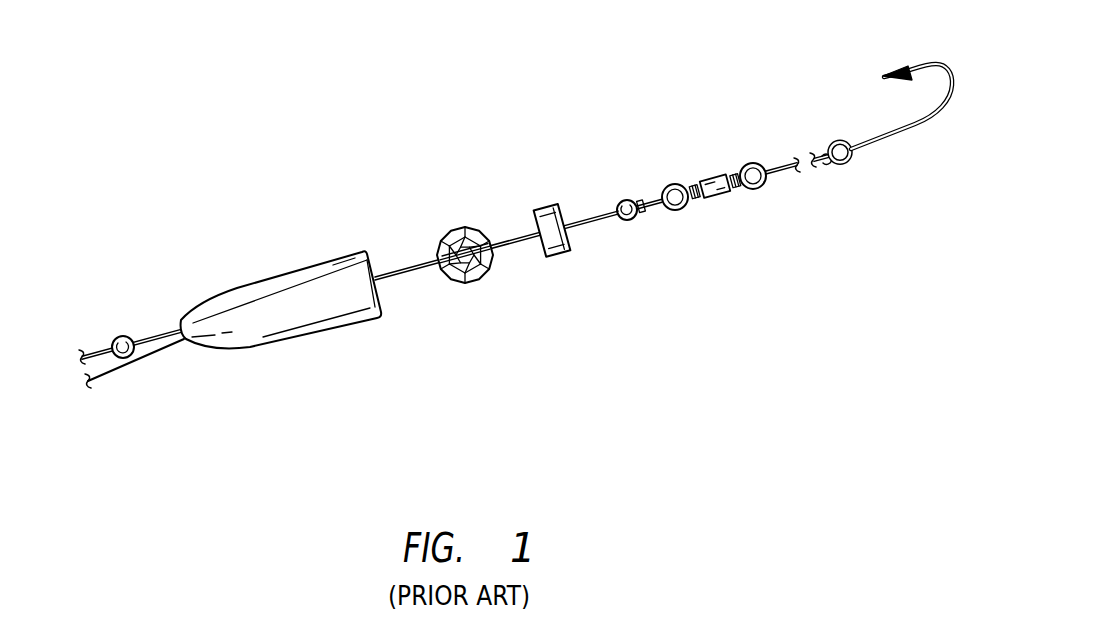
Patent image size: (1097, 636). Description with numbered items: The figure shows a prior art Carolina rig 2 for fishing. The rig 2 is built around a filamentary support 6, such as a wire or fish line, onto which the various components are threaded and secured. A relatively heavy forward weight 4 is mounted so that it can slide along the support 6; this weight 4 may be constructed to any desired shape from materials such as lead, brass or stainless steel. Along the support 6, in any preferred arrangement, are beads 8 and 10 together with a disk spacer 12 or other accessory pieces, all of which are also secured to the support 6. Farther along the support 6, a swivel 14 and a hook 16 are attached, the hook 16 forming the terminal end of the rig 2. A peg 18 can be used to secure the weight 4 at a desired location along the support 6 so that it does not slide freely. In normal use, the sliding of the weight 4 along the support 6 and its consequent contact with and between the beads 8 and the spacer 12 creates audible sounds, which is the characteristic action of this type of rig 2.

The Carolina rig 2 is at (538, 135).
The forward weight 4 is at (307, 337).
The filamentary support 6 is at (402, 266).
The bead 8 is at (473, 283).
The bead 10 is at (127, 336).
The disk spacer 12 is at (562, 262).
The swivel 14 is at (724, 198).
The hook 16 is at (890, 143).
The peg 18 is at (120, 372).